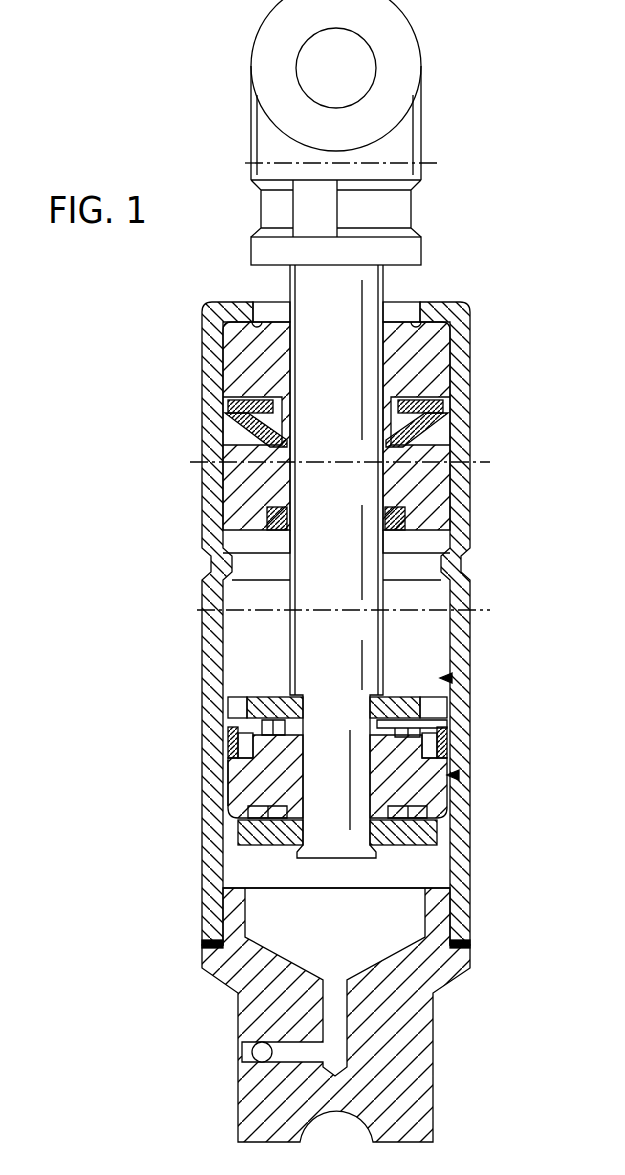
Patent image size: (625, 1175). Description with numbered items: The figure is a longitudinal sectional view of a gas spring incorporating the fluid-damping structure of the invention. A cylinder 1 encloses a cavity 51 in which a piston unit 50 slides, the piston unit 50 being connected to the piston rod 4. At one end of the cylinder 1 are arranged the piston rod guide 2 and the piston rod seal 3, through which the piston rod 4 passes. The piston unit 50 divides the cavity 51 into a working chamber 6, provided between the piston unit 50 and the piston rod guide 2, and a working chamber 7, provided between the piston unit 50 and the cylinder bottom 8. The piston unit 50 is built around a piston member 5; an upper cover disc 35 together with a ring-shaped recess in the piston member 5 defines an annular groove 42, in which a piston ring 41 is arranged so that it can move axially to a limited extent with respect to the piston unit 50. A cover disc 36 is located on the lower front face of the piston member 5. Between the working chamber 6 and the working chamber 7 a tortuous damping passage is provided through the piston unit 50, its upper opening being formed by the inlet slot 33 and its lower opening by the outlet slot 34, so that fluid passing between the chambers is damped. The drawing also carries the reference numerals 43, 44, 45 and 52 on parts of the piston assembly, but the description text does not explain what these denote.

The cylinder 1 is at (212, 520).
The piston rod guide 2 is at (435, 343).
The piston rod seal 3 is at (412, 450).
The piston rod 4 is at (350, 640).
The piston member 5 is at (243, 775).
The working chamber 6 is at (432, 630).
The working chamber 7 is at (430, 857).
The cylinder bottom 8 is at (437, 913).
The inlet slot 33 is at (420, 727).
The outlet slot 34 is at (432, 812).
The upper cover disc 35 is at (284, 697).
The cover disc 36 is at (240, 830).
The piston ring 41 is at (453, 728).
The annular groove 42 is at (432, 745).
The valve ring 43 is at (228, 730).
The valve disc 44 is at (283, 700).
The valve ring 45 is at (245, 710).
The piston unit 50 is at (452, 775).
The cavity 51 is at (445, 678).
The piston outer surface 52 is at (228, 795).